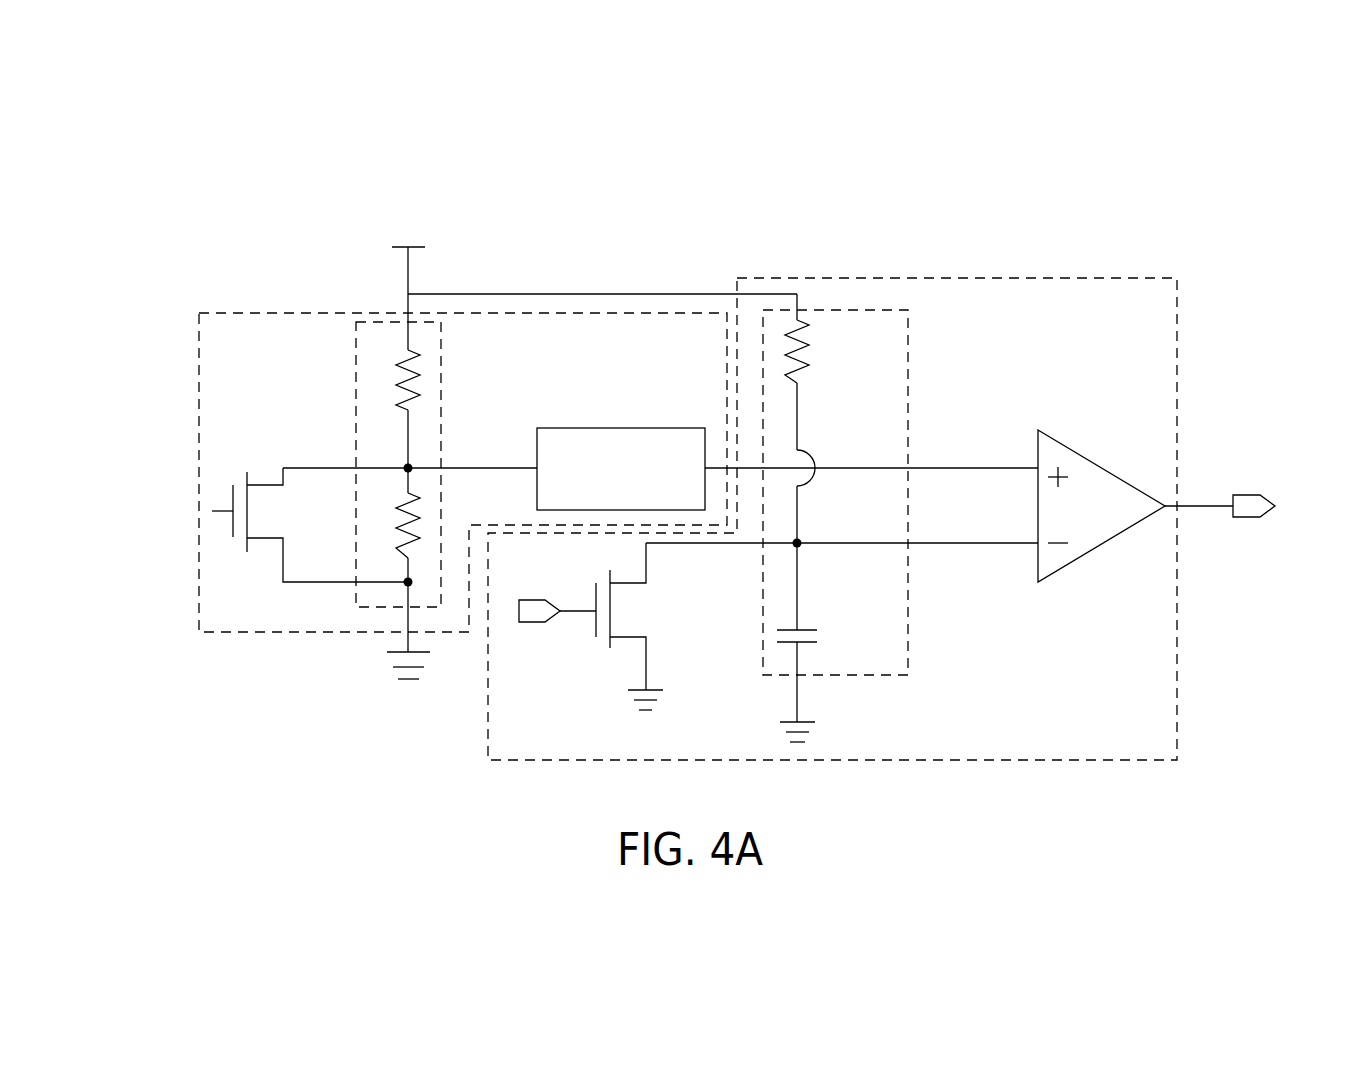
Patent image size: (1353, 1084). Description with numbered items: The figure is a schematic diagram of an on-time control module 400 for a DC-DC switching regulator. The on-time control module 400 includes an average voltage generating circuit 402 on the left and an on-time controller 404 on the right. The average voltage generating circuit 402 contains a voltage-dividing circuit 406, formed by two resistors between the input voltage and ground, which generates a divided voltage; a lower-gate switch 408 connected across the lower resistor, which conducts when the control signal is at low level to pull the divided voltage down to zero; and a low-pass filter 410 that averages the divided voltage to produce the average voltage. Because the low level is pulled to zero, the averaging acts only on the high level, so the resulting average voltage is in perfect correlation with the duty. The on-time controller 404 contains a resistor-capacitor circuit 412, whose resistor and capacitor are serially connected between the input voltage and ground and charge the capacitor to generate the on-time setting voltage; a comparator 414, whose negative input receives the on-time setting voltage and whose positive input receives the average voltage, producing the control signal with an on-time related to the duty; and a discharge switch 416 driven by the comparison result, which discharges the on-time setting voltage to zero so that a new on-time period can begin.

The on-time control module 400 is at (1187, 228).
The average voltage generating circuit 402 is at (199, 442).
The on-time controller 404 is at (1072, 278).
The voltage-dividing circuit 406 is at (356, 375).
The lower-gate switch 408 is at (274, 516).
The low-pass filter 410 is at (620, 428).
The resistor-capacitor circuit 412 is at (905, 310).
The comparator 414 is at (1103, 468).
The discharge switch 416 is at (648, 617).